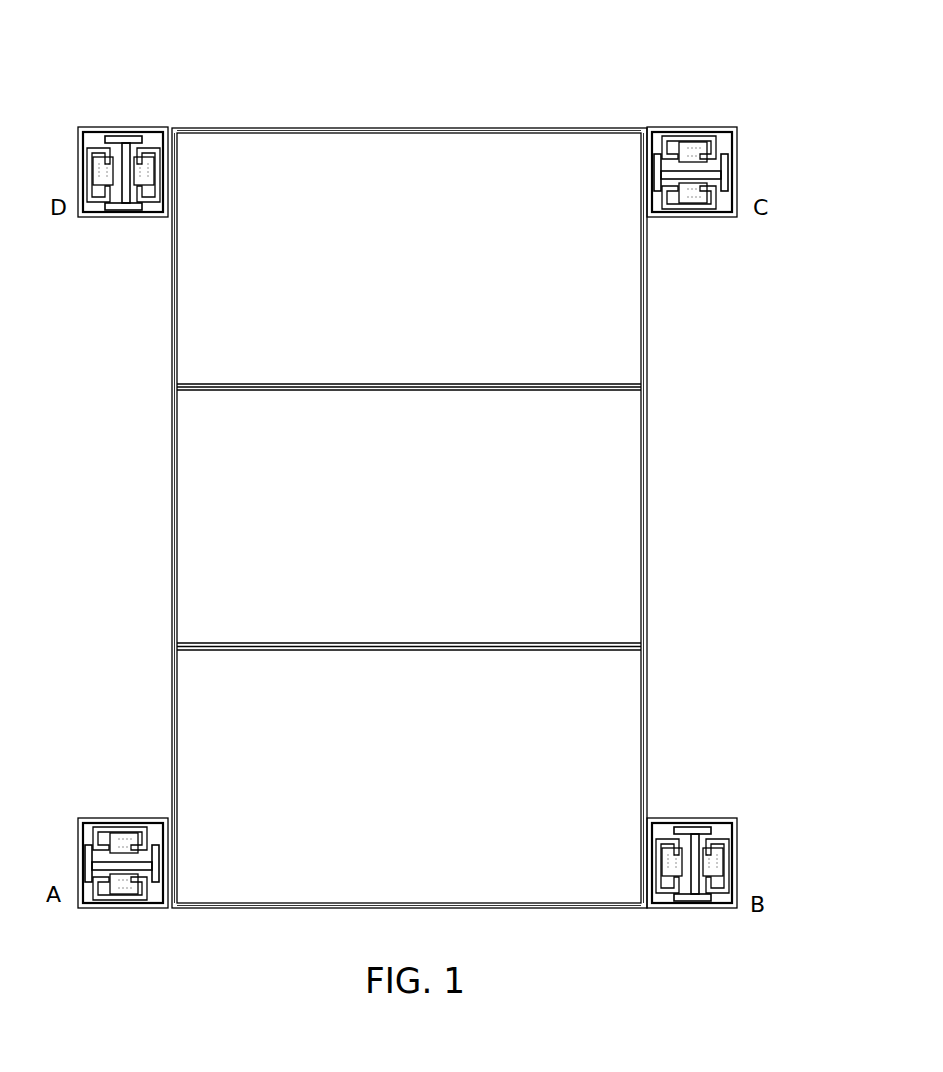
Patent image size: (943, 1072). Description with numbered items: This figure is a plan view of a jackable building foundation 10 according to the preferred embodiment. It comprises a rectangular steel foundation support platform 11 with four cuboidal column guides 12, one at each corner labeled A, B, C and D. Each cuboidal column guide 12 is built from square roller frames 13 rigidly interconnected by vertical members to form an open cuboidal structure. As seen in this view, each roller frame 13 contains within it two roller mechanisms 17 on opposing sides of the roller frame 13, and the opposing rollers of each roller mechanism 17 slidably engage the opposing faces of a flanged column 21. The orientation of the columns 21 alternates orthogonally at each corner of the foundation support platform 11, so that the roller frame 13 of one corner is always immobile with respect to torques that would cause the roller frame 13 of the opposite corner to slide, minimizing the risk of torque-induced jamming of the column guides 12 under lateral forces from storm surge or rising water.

The jackable building foundation 10 is at (431, 503).
The foundation support platform 11 is at (650, 510).
The cuboidal column guide 12 is at (431, 513).
The roller frame 13 is at (738, 172).
The roller mechanism 17 is at (80, 138).
The flanged column 21 is at (128, 211).